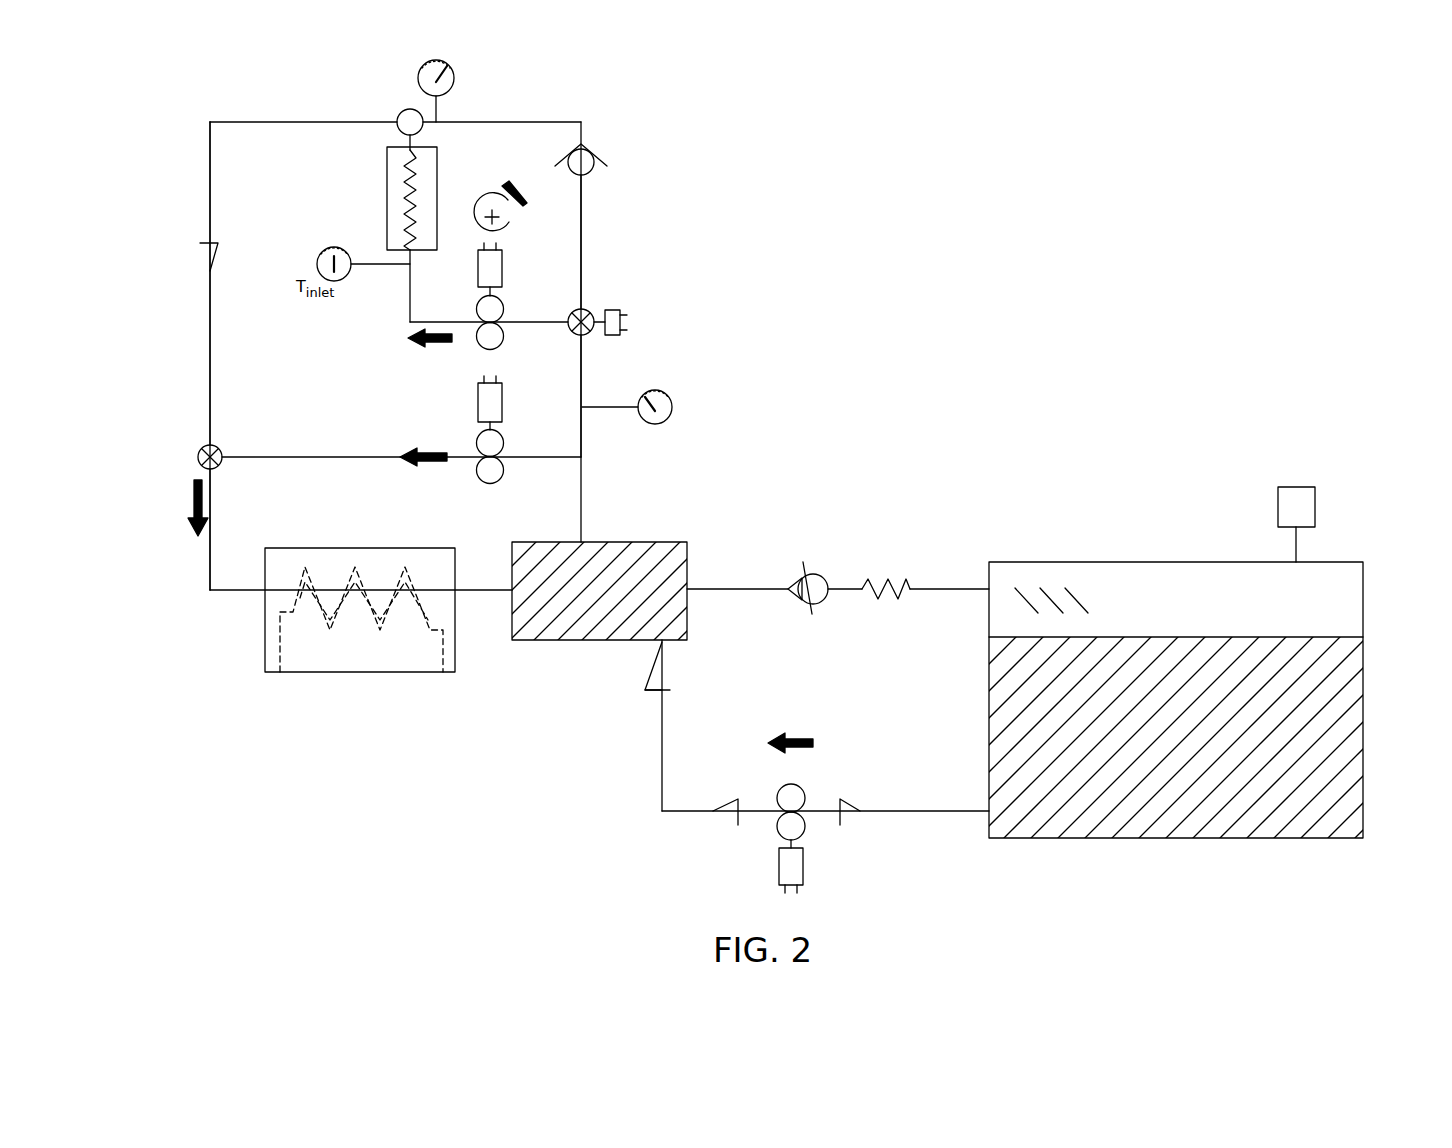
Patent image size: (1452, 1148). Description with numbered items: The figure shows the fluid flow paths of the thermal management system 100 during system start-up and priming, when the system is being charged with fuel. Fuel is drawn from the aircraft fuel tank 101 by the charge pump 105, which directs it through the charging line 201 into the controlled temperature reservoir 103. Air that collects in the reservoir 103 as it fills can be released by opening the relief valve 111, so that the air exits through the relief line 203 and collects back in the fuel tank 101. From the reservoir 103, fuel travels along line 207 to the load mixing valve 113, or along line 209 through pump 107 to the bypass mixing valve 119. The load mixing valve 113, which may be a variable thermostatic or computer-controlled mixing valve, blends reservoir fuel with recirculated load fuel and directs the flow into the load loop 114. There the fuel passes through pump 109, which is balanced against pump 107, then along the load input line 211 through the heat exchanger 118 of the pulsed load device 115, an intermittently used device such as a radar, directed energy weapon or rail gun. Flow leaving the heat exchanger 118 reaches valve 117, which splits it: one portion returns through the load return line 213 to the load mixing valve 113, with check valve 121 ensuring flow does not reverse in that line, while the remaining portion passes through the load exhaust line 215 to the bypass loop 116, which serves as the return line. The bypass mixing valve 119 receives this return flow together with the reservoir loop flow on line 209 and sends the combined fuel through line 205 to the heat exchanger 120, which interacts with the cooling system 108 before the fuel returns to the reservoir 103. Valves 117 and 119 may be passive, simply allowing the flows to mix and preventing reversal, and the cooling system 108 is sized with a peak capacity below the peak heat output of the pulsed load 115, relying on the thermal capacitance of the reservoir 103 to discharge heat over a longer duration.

The thermal management system 100 is at (902, 280).
The aircraft fuel tank 101 is at (1375, 682).
The controlled temperature reservoir 103 is at (570, 641).
The charge pump 105 is at (803, 865).
The pump 107 is at (503, 391).
The cooling system 108 is at (270, 671).
The pump 109 is at (509, 293).
The relief valve 111 is at (852, 573).
The load mixing valve 113 is at (625, 300).
The load loop 114 is at (511, 212).
The pulsed load device 115 is at (437, 148).
The bypass loop 116 is at (198, 182).
The valve 117 is at (407, 108).
The heat exchanger 118 is at (413, 227).
The bypass mixing valve 119 is at (204, 446).
The heat exchanger 120 is at (372, 618).
The check valve 121 is at (603, 152).
The charging line 201 is at (677, 812).
The relief line 203 is at (727, 585).
The line 205 is at (208, 577).
The line 207 is at (583, 379).
The line 209 is at (331, 457).
The load input line 211 is at (408, 287).
The load return line 213 is at (582, 235).
The load exhaust line 215 is at (209, 228).